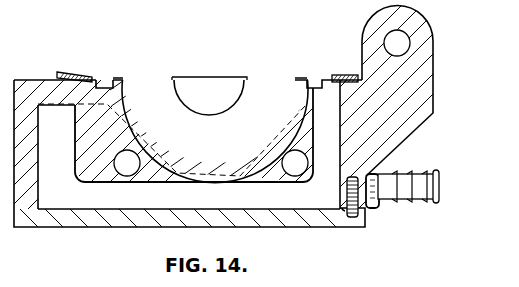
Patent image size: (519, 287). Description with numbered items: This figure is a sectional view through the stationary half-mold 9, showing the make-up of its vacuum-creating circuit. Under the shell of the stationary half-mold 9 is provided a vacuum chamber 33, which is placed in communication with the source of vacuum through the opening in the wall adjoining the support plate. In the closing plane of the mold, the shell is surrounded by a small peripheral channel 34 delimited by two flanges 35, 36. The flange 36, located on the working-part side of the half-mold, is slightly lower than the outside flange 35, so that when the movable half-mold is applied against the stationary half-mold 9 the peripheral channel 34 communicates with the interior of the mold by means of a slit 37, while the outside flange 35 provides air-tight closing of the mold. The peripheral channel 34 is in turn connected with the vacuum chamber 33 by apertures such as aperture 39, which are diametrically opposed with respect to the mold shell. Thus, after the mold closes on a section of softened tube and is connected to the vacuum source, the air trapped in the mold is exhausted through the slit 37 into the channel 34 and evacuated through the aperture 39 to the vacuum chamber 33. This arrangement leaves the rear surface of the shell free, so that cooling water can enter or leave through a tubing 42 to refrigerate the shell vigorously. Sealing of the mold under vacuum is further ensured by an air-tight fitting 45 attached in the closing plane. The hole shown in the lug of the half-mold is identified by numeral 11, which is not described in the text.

The stationary half-mold 9 is at (425, 100).
The mounting hole 11 is at (427, 48).
The vacuum chamber 33 is at (97, 200).
The peripheral channel 34 is at (104, 80).
The outside flange 35 is at (92, 79).
The flange 36 is at (128, 79).
The slit 37 is at (118, 79).
The aperture 39 is at (326, 78).
The tubing 42 is at (439, 187).
The air-tight fitting 45 is at (72, 72).